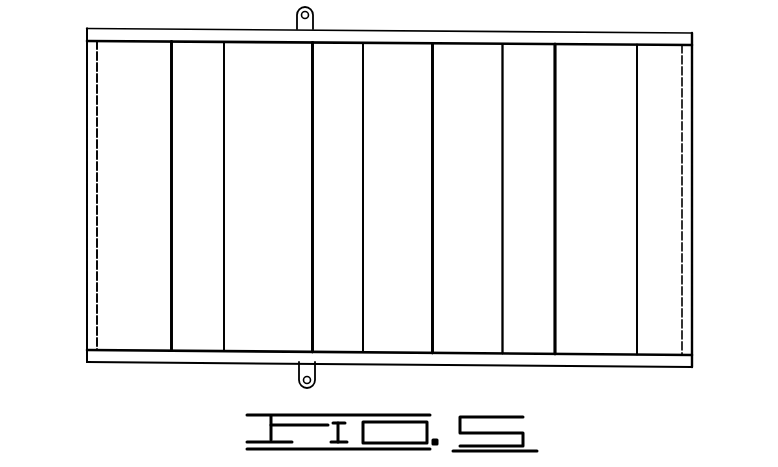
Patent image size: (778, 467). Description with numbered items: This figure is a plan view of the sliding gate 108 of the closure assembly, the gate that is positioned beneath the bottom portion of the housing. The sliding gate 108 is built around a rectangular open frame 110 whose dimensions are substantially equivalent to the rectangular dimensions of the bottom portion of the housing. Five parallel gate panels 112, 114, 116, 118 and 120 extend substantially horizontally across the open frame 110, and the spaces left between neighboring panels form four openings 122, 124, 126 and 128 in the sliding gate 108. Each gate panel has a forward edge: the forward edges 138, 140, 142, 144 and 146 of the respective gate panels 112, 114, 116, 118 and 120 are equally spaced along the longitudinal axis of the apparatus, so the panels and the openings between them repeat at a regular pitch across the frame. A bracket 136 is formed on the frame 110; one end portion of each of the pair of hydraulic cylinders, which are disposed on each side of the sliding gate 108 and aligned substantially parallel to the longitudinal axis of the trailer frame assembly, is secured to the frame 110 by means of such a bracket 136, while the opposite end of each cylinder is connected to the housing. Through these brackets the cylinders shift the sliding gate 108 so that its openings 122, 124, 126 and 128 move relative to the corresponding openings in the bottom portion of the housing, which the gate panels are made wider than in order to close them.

The sliding gate 108 is at (545, 32).
The rectangular open frame 110 is at (617, 32).
The gate panel 112 is at (138, 337).
The gate panel 114 is at (280, 323).
The gate panel 116 is at (403, 337).
The gate panel 118 is at (525, 343).
The gate panel 120 is at (670, 343).
The opening 122 is at (213, 281).
The opening 124 is at (350, 261).
The opening 126 is at (480, 260).
The opening 128 is at (609, 251).
The bracket 136 is at (314, 20).
The forward edge 138 is at (86, 157).
The forward edge 140 is at (225, 185).
The forward edge 142 is at (363, 158).
The forward edge 144 is at (502, 182).
The forward edge 146 is at (637, 185).